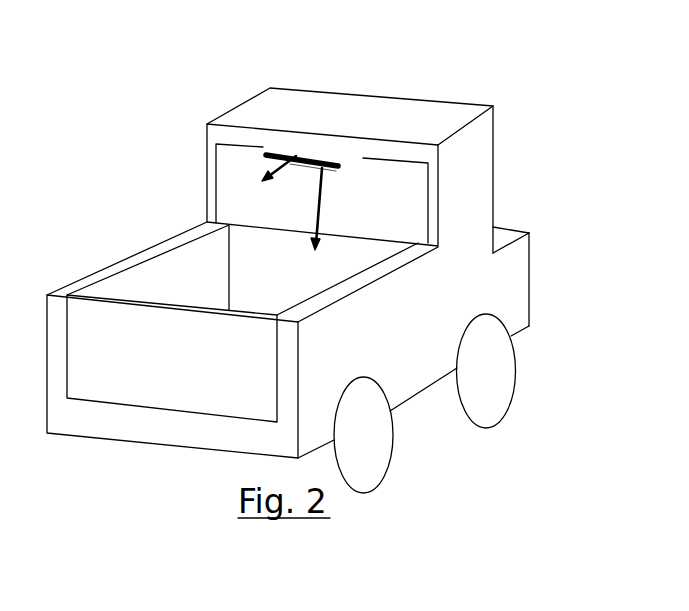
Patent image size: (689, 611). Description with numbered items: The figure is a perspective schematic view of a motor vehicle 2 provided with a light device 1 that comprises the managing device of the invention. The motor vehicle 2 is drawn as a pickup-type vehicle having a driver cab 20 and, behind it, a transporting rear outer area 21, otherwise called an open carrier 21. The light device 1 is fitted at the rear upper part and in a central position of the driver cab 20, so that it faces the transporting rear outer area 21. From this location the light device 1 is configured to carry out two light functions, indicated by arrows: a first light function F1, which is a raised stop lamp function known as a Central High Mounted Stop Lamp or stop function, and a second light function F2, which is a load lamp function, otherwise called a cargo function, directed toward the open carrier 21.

The light device 1 is at (287, 134).
The motor vehicle 2 is at (146, 79).
The driver cab 20 is at (425, 127).
The transporting rear outer area 21 is at (220, 305).
The first light function F1 is at (263, 181).
The second light function F2 is at (300, 222).